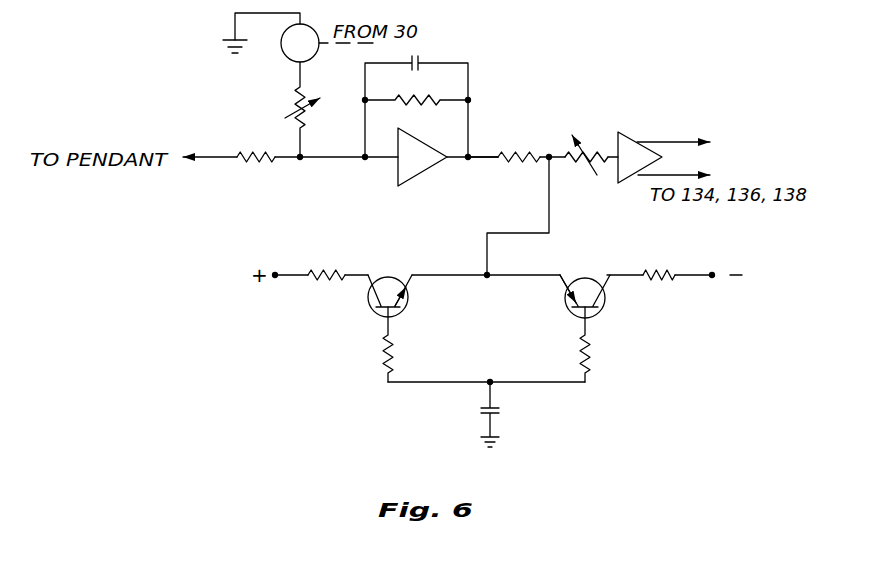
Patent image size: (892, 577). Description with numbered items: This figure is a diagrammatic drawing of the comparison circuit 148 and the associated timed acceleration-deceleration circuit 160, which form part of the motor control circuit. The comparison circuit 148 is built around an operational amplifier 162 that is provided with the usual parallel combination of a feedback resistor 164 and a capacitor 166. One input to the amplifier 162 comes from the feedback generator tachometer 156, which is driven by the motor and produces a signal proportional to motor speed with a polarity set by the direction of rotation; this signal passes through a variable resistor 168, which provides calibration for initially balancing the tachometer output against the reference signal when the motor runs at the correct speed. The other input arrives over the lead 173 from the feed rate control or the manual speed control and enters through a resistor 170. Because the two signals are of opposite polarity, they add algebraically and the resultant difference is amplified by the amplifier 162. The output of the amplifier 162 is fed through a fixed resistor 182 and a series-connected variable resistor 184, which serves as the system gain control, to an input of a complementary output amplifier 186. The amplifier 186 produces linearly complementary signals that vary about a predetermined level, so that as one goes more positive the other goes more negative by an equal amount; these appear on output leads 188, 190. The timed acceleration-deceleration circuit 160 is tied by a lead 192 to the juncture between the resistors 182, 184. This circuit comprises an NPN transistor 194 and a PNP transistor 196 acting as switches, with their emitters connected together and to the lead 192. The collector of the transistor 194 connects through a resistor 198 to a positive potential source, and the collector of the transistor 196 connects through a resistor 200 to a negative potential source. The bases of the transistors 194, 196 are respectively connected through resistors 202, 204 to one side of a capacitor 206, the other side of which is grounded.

The comparison circuit 148 is at (488, 135).
The feedback generator tachometer 156 is at (286, 60).
The timed acceleration-deceleration circuit 160 is at (505, 341).
The operational amplifier 162 is at (422, 170).
The feedback resistor 164 is at (418, 104).
The capacitor 166 is at (418, 70).
The variable resistor 168 is at (308, 116).
The resistor 170 is at (257, 161).
The lead 173 is at (218, 155).
The fixed resistor 182 is at (534, 163).
The variable resistor 184 is at (572, 166).
The complementary output amplifier 186 is at (632, 137).
The output lead 188 is at (678, 142).
The output lead 190 is at (670, 175).
The lead 192 is at (486, 234).
The NPN transistor 194 is at (383, 276).
The PNP transistor 196 is at (573, 278).
The resistor 198 is at (340, 270).
The resistor 200 is at (662, 275).
The resistor 202 is at (381, 356).
The resistor 204 is at (590, 350).
The capacitor 206 is at (500, 412).